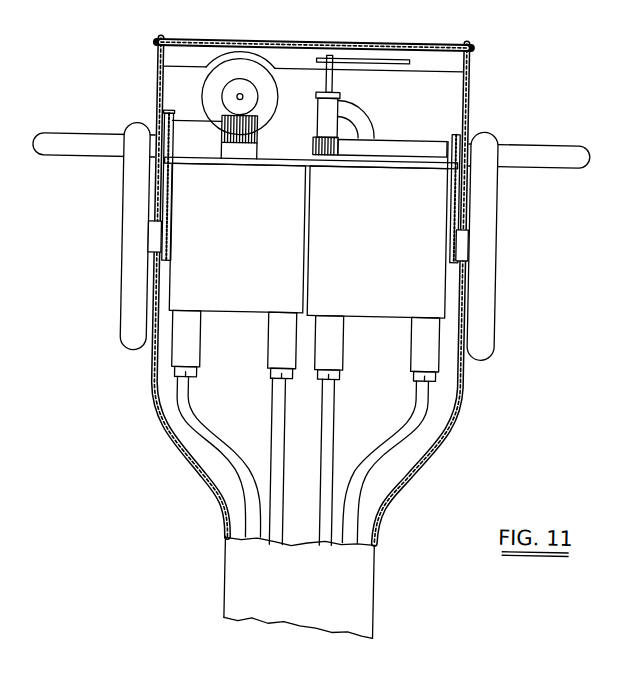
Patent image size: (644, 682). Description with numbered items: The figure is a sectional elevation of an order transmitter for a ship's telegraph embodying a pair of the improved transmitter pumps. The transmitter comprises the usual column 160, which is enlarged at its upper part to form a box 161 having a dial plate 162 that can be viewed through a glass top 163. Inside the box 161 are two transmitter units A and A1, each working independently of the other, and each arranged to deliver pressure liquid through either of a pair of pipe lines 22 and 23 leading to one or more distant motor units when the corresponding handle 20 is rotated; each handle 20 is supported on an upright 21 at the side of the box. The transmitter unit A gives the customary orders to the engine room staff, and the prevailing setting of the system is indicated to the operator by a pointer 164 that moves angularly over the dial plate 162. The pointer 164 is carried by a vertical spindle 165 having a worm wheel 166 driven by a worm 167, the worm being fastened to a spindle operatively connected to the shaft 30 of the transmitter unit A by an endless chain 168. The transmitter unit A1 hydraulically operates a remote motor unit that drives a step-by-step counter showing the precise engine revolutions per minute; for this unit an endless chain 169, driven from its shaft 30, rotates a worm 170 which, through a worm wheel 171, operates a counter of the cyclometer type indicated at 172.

The handle 20 is at (44, 158).
The upright arm 21 is at (131, 213).
The pipe line 22 is at (279, 396).
The pipe line 23 is at (184, 392).
The shaft 30 is at (149, 240).
The column 160 is at (313, 617).
The box 161 is at (466, 107).
The dial plate 162 is at (466, 66).
The glass top 163 is at (413, 43).
The pointer 164 is at (353, 58).
The vertical spindle 165 is at (328, 87).
The worm wheel 166 is at (310, 143).
The worm 167 is at (354, 131).
The endless chain 168 is at (461, 182).
The endless chain 169 is at (161, 178).
The worm 170 is at (208, 117).
The worm wheel 171 is at (254, 98).
The counter 172 is at (236, 69).
The transmitter unit A is at (430, 298).
The transmitter unit A1 is at (187, 292).